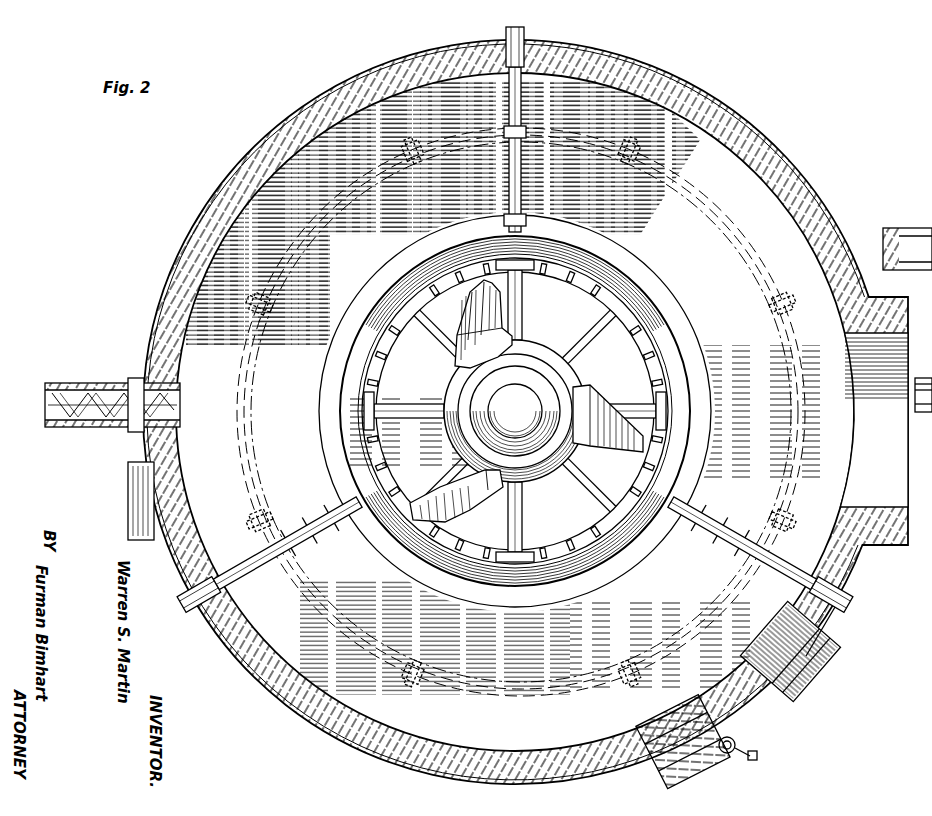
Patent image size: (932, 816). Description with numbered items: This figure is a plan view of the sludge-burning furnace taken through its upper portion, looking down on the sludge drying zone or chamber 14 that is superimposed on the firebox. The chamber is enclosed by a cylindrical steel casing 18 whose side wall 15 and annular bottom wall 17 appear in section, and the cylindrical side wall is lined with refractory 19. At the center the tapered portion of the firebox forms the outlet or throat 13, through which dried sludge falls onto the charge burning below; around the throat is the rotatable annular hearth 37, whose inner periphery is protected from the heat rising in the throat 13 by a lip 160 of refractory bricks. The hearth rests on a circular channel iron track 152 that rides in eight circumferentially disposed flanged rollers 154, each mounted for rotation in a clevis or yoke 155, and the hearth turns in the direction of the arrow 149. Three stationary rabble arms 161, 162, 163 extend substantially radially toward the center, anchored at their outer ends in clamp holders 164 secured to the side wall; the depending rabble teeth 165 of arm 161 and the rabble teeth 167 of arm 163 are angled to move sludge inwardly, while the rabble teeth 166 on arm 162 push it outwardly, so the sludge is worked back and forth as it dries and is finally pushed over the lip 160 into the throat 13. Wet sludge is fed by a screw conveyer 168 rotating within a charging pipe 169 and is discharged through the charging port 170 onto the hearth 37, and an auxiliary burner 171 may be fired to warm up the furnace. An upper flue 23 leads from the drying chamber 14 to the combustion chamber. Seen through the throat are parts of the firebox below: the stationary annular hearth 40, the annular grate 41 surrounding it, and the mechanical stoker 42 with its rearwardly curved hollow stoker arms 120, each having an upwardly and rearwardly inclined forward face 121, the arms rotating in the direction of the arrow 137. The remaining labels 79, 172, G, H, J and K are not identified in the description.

The throat 13 is at (578, 258).
The sludge drying zone 14 is at (782, 246).
The side wall 15 is at (822, 190).
The annular bottom wall 17 is at (690, 140).
The cylindrical steel casing 18 is at (752, 128).
The refractory lining 19 is at (770, 163).
The upper flue 23 is at (888, 496).
The rotatable annular hearth 37 is at (750, 455).
The stationary annular hearth 40 is at (575, 300).
The annular grate 41 is at (648, 331).
The mechanical stoker 42 is at (436, 430).
The shaft 79 is at (515, 411).
The stoker arm 120 is at (455, 350).
The forward face 121 is at (470, 322).
The direction arrow 137 is at (406, 388).
The direction arrow 149 is at (380, 230).
The circular channel iron track 152 is at (256, 353).
The flanged roller 154 is at (412, 143).
The clevis 155 is at (416, 162).
The lip 160 is at (622, 565).
The rabble arm 161 is at (522, 190).
The rabble arm 162 is at (706, 512).
The rabble arm 163 is at (312, 512).
The clamp holder 164 is at (526, 42).
The rabble teeth 165 is at (527, 132).
The rabble teeth 166 is at (702, 546).
The rabble teeth 167 is at (312, 545).
The screw conveyer 168 is at (75, 430).
The charging pipe 169 is at (118, 428).
The charging port 170 is at (148, 458).
The burner 171 is at (738, 741).
The outlet box 172 is at (678, 733).
The casing assembly G is at (299, 105).
The rotor region H is at (546, 527).
The slotted ring J is at (652, 363).
The hub region K is at (545, 338).